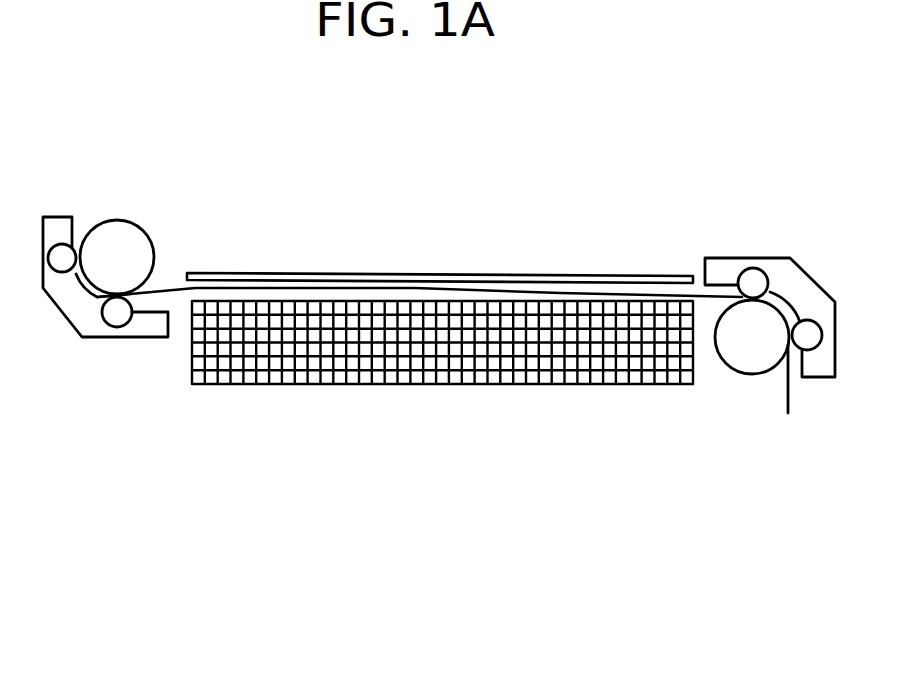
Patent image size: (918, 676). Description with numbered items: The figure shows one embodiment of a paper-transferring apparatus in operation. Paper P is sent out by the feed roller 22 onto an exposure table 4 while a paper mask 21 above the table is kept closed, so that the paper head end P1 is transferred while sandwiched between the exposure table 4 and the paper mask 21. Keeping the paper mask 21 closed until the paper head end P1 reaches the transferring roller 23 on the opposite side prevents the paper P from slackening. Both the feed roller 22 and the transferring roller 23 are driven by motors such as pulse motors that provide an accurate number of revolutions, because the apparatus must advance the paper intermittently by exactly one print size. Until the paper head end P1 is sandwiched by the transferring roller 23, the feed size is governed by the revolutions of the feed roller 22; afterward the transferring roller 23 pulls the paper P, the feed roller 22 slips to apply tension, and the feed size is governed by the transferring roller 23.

The transferring roller 23 is at (119, 240).
The feed roller 22 is at (748, 358).
The paper mask 21 is at (665, 275).
The exposure table 4 is at (430, 362).
The paper P is at (413, 288).
The paper head end P1 is at (92, 303).